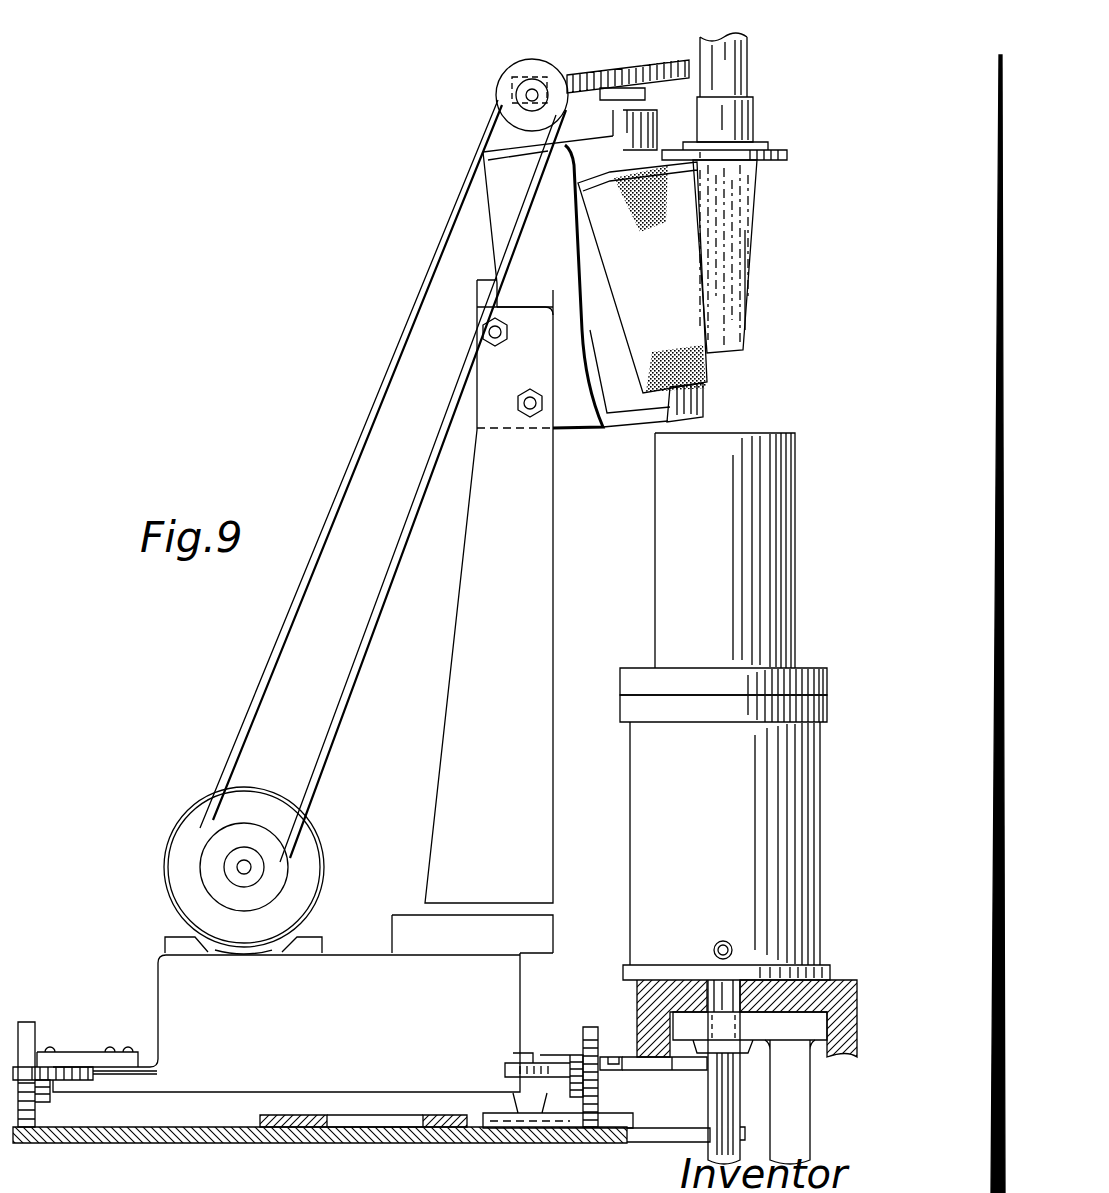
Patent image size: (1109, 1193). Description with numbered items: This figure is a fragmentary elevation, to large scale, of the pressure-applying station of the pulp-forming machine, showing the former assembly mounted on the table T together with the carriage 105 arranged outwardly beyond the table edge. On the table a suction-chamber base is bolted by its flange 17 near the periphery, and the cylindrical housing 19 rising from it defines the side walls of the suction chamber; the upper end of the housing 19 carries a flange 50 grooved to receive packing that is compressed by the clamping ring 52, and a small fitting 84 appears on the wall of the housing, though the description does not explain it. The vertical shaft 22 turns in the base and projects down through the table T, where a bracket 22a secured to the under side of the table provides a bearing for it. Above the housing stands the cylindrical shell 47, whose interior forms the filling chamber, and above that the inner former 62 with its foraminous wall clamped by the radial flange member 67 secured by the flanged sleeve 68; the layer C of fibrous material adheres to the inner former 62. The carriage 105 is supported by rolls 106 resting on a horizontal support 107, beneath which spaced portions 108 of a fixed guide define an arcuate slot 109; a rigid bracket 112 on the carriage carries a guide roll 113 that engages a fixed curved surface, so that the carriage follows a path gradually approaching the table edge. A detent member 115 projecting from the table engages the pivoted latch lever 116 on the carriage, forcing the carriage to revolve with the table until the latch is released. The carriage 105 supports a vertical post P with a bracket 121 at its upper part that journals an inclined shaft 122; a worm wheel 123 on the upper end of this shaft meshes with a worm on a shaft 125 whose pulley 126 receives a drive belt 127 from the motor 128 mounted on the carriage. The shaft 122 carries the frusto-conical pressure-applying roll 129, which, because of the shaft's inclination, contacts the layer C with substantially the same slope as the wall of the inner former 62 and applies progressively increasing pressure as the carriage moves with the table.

The flange 17 is at (830, 967).
The cylindrical housing 19 is at (817, 873).
The vertical shaft 22 is at (710, 1137).
The bracket 22a is at (803, 1113).
The cylindrical shell 47 is at (790, 627).
The flange 50 is at (827, 710).
The clamping ring 52 is at (827, 673).
The inner former 62 is at (757, 207).
The radial flange member 67 is at (783, 148).
The flanged sleeve 68 is at (753, 103).
The screw 84 is at (717, 947).
The carriage 105 is at (167, 1002).
The rolls 106 is at (33, 1037).
The horizontal support 107 is at (252, 1133).
The spaced portions 108 is at (307, 1120).
The arcuate slot 109 is at (368, 1120).
The rigid bracket 112 is at (83, 1040).
The guide roll 113 is at (147, 1073).
The detent member 115 is at (633, 1065).
The latch lever 116 is at (610, 1057).
The bracket 121 is at (583, 355).
The inclined shaft 122 is at (640, 97).
The worm wheel 123 is at (600, 45).
The shaft 125 is at (532, 88).
The pulley 126 is at (510, 83).
The drive belt 127 is at (428, 258).
The motor 128 is at (307, 867).
The pressure-applying roll 129 is at (697, 358).
The layer of fibrous material C is at (757, 247).
The vertical post P is at (543, 798).
The table T is at (637, 990).